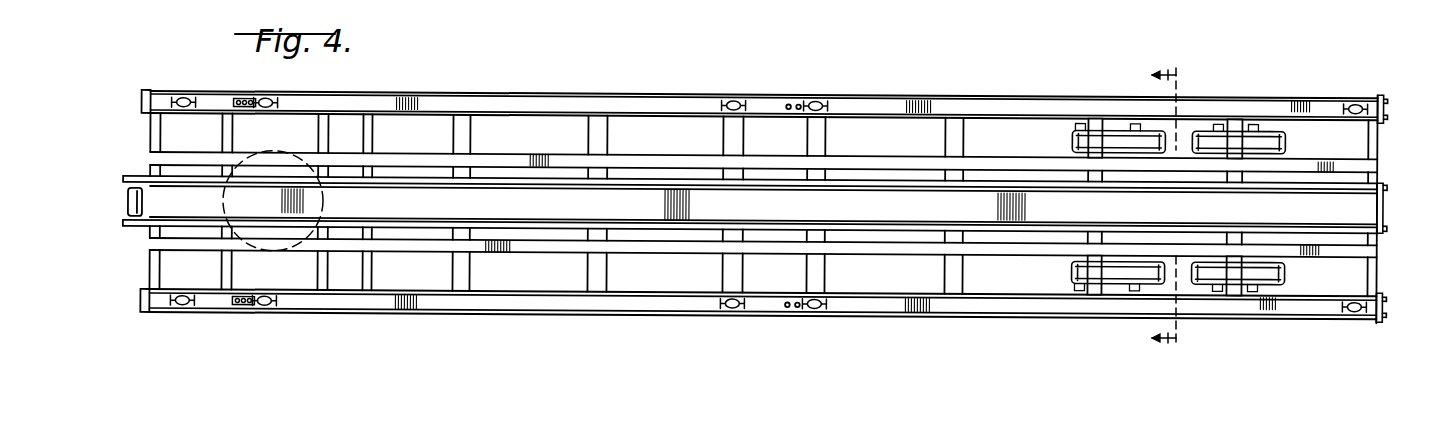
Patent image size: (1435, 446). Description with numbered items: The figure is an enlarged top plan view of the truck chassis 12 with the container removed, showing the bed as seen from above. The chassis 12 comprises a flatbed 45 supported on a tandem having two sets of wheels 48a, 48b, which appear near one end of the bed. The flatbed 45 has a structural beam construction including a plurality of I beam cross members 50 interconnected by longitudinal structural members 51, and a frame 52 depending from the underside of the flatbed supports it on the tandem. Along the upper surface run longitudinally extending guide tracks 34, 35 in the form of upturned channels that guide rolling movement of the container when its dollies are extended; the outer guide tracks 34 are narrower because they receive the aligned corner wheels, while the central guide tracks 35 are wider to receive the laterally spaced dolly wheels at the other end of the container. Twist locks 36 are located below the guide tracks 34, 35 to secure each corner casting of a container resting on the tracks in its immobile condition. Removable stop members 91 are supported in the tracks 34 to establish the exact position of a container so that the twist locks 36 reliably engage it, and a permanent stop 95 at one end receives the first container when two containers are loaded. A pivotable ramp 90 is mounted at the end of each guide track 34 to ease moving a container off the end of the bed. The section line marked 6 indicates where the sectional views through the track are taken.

The chassis 12 is at (388, 320).
The guide tracks 34 is at (518, 103).
The central guide tracks 35 is at (518, 214).
The twist locks 36 is at (265, 113).
The flatbed 45 is at (905, 93).
The first set of wheels 48a is at (1070, 131).
The second set of wheels 48b is at (1287, 130).
The I beam cross members 50 is at (1088, 115).
The longitudinal structural members 51 is at (640, 95).
The frame 52 is at (527, 152).
The pivotable ramp 90 is at (1384, 98).
The removable stop members 91 is at (246, 96).
The permanent stop 95 is at (147, 100).
The section line 6- 6 is at (1180, 210).